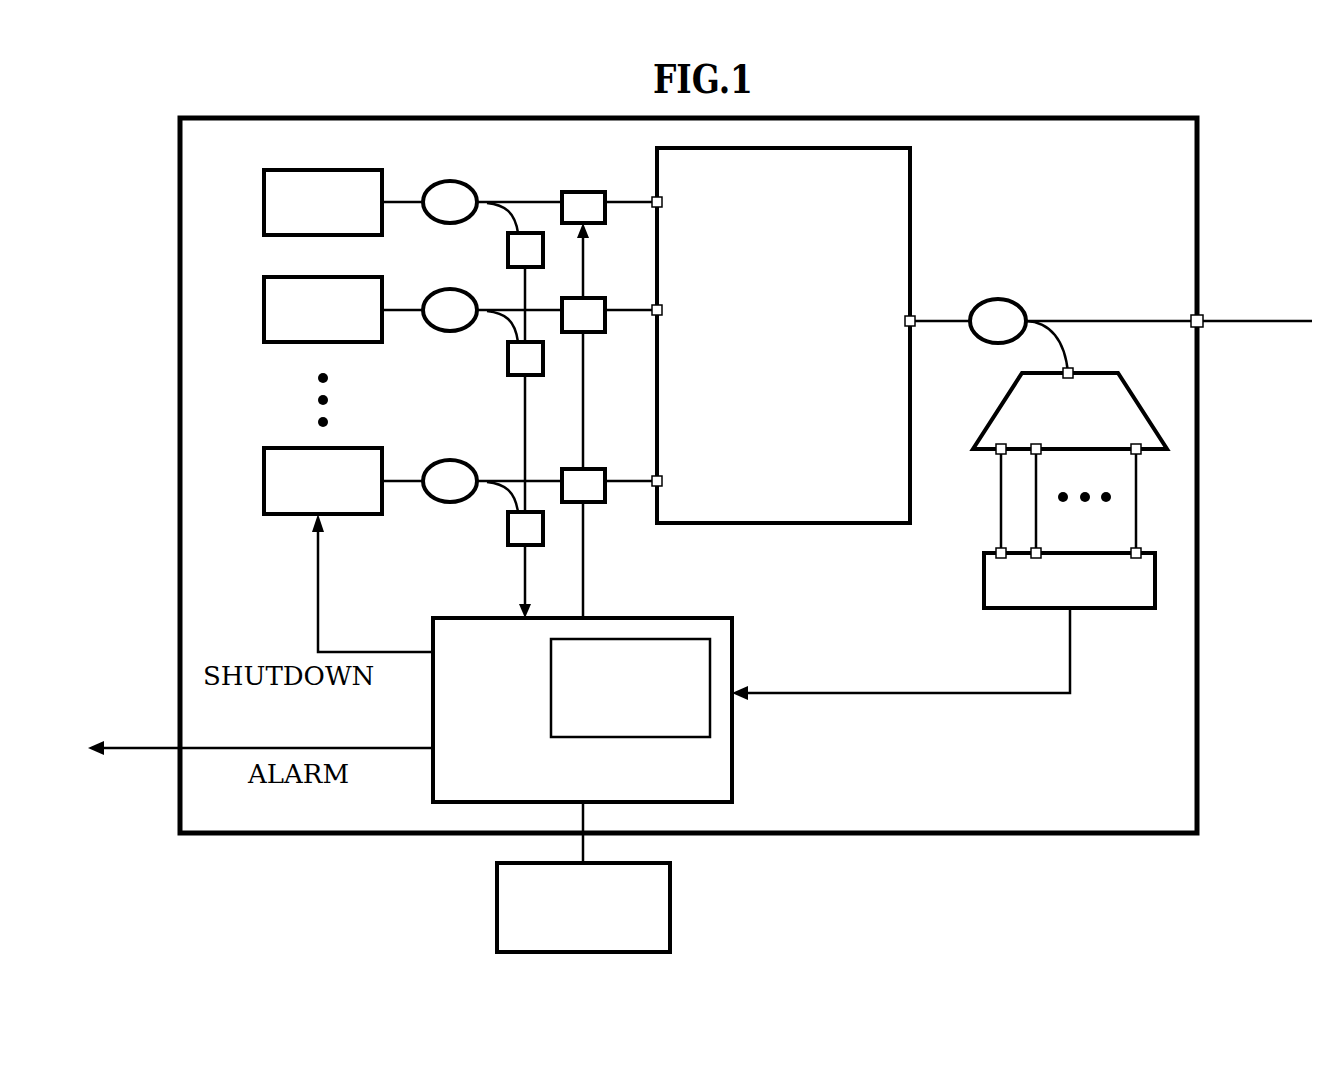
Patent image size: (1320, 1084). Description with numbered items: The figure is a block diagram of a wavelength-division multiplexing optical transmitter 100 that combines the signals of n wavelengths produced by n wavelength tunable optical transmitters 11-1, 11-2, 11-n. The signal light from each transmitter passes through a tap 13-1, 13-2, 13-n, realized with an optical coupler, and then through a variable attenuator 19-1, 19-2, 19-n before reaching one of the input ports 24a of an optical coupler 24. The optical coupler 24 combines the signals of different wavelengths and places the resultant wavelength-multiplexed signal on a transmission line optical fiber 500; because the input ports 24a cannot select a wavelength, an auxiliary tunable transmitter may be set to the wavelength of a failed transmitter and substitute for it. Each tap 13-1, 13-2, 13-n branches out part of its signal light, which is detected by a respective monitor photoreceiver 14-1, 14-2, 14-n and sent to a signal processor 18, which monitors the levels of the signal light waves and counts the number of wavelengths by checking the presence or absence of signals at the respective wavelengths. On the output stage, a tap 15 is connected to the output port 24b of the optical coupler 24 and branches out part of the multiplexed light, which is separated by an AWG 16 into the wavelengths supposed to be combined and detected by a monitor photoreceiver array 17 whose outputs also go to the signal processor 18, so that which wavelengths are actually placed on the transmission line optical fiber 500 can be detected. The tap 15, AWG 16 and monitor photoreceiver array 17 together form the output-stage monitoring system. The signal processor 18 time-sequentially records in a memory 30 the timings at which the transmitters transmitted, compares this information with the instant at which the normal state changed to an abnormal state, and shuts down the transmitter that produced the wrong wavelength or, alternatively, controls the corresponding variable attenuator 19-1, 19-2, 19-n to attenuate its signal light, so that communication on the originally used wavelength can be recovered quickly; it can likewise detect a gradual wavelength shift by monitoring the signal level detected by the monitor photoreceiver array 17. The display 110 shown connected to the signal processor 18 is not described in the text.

The wavelength-division multiplexing optical transmitter 100 is at (955, 117).
The wavelength tunable optical transmitter 11-1 is at (264, 195).
The wavelength tunable optical transmitter 11-2 is at (264, 302).
The wavelength tunable optical transmitter 11-n is at (264, 474).
The tap 13-1 is at (422, 185).
The tap 13-2 is at (422, 292).
The tap 13-n is at (422, 464).
The monitor photoreceiver 14-1 is at (522, 232).
The monitor photoreceiver 14-2 is at (508, 360).
The monitor photoreceiver 14-n is at (508, 530).
The variable attenuator 19-1 is at (604, 226).
The variable attenuator 19-2 is at (604, 335).
The variable attenuator 19-n is at (604, 505).
The optical coupler 24 is at (912, 176).
The input port 24a is at (655, 200).
The output port 24b is at (914, 318).
The tap 15 is at (1005, 300).
The AWG 16 is at (1132, 395).
The monitor photoreceiver array 17 is at (984, 575).
The signal processor 18 is at (660, 616).
The memory 30 is at (712, 655).
The display 110 is at (672, 920).
The transmission line optical fiber 500 is at (1218, 320).